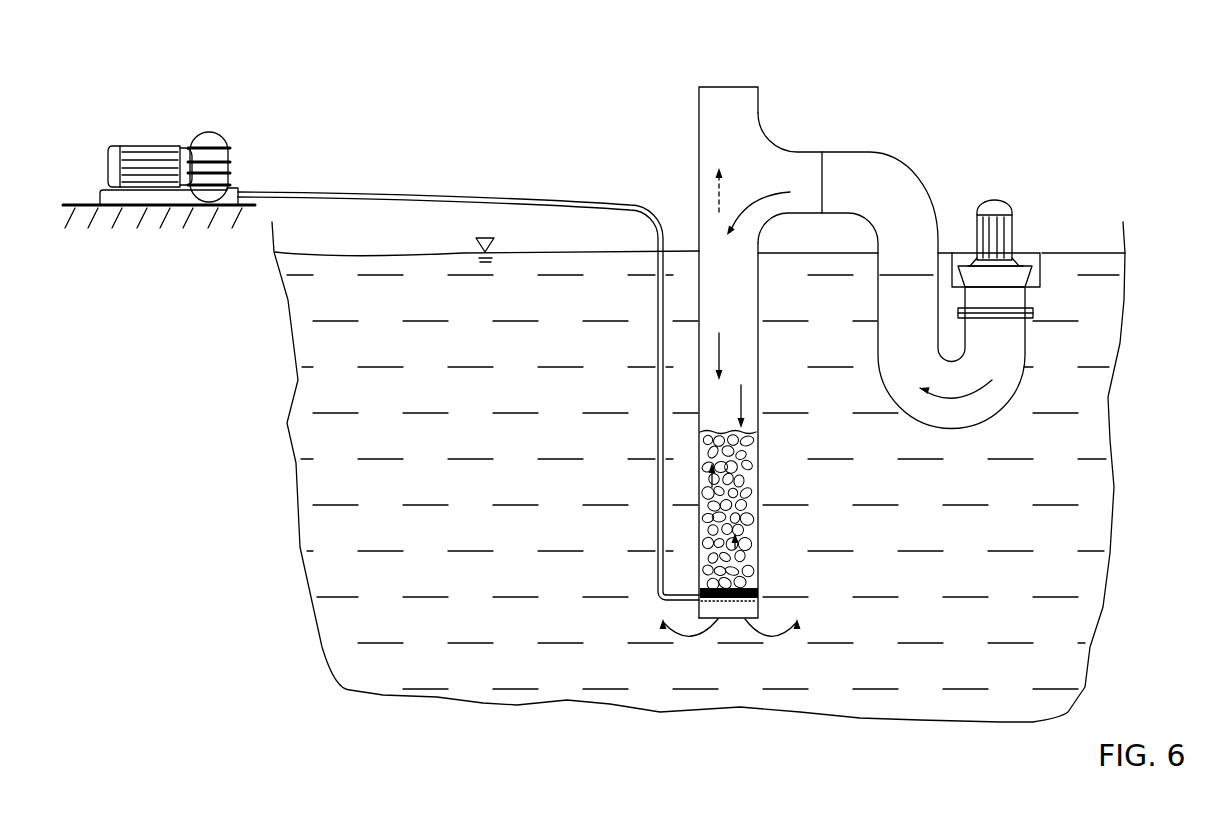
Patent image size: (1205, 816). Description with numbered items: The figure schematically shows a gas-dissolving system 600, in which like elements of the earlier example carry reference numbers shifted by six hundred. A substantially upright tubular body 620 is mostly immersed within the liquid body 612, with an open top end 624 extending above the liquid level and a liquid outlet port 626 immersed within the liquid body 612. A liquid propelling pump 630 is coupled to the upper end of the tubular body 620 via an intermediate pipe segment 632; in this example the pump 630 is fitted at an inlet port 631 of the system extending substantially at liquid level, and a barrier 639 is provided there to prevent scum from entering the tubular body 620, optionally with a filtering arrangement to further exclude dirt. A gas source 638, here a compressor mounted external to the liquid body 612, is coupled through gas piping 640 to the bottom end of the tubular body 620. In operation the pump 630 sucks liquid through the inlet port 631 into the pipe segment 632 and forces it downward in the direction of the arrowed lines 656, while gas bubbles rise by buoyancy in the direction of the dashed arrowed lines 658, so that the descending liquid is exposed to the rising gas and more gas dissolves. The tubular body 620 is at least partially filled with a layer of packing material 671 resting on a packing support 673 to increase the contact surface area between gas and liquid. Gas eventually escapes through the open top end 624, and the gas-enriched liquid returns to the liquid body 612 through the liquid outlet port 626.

The system 600 is at (1092, 78).
The liquid body 612 is at (467, 670).
The tubular body 620 is at (760, 490).
The open top end 624 is at (728, 92).
The liquid outlet port 626 is at (728, 618).
The liquid propelling pump 630 is at (992, 208).
The inlet port 631 is at (1020, 280).
The pipe segment 632 is at (847, 172).
The gas source 638 is at (128, 150).
The barrier 639 is at (1040, 278).
The gas piping 640 is at (658, 330).
The arrowed lines 656 is at (742, 385).
The dashed arrowed lines 658 is at (745, 556).
The packing material 671 is at (700, 447).
The packing support 673 is at (760, 590).